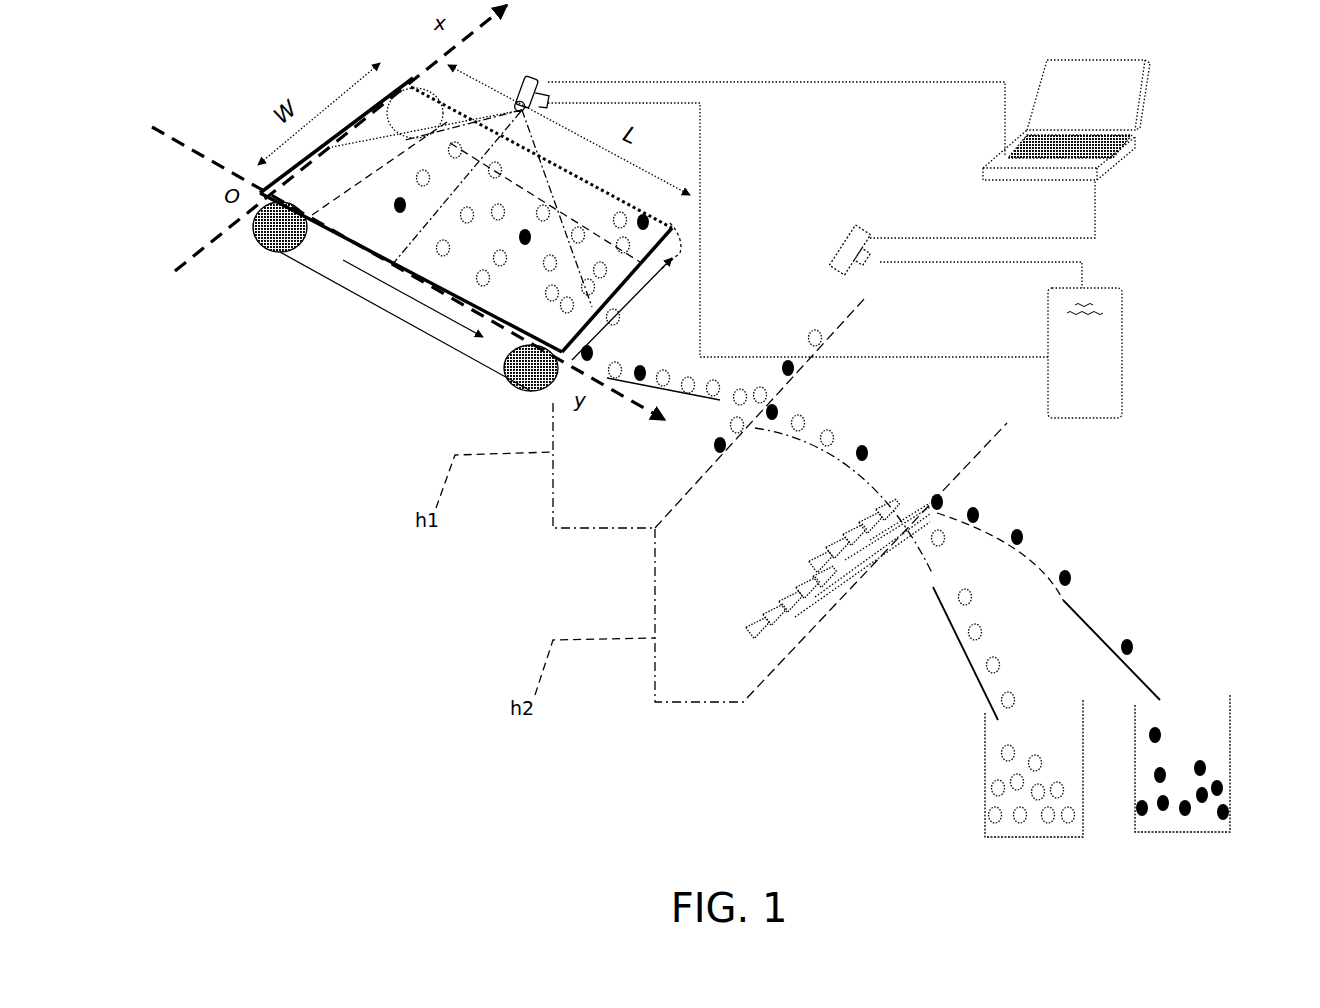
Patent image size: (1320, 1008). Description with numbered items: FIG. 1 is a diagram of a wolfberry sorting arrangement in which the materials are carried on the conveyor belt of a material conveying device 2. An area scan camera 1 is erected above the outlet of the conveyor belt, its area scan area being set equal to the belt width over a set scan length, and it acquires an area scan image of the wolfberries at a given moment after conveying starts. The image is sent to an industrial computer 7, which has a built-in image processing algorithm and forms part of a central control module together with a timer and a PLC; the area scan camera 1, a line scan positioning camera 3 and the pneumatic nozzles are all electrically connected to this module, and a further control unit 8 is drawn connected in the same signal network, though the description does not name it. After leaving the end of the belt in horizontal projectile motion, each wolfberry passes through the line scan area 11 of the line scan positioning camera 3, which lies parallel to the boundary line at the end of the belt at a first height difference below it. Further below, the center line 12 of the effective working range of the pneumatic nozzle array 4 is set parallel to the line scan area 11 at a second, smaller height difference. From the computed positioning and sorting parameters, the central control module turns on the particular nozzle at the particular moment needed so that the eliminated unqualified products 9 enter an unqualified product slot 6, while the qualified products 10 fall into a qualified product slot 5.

The area scan camera 1 is at (547, 78).
The material conveying device 2 is at (378, 288).
The line scan positioning camera 3 is at (868, 228).
The pneumatic nozzle array 4 is at (813, 545).
The qualified product slot 5 is at (990, 810).
The unqualified product slot 6 is at (1230, 800).
The industrial computer 7 is at (1140, 150).
The controller / power unit 8 is at (1122, 355).
The eliminated unqualified products 9 is at (1072, 572).
The qualified products 10 is at (1007, 755).
The line scan area 11 is at (707, 462).
The center line of effective working range of pneumatic nozzle array 12 is at (785, 663).